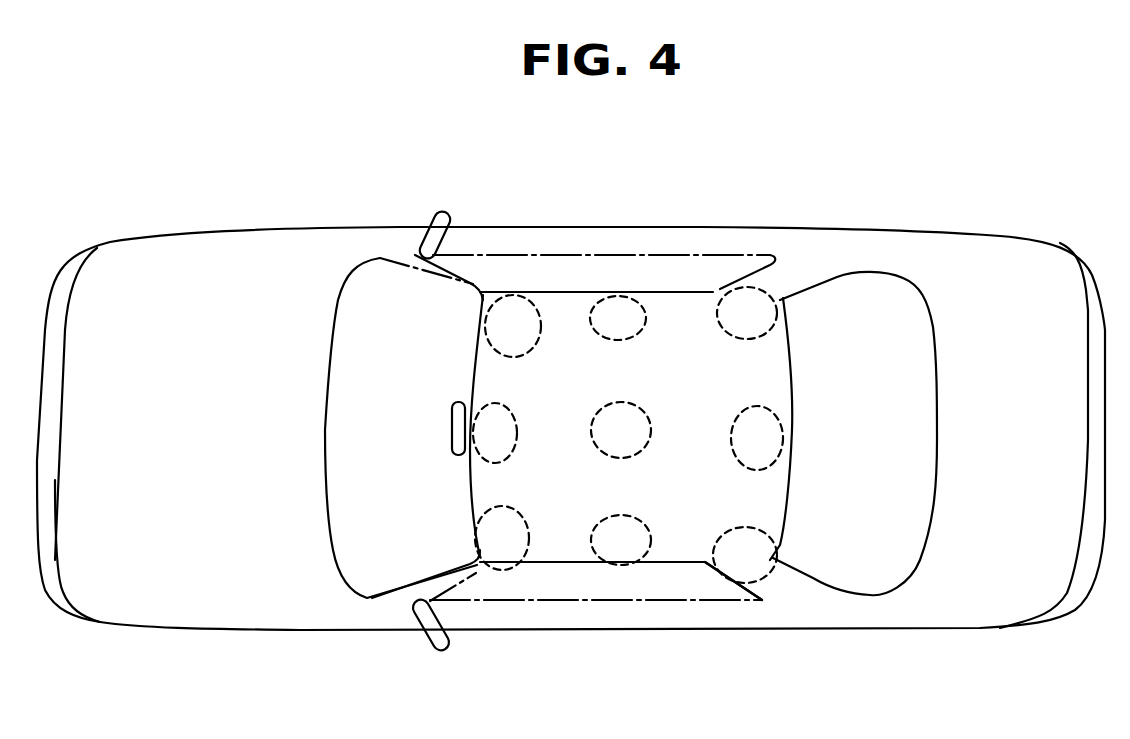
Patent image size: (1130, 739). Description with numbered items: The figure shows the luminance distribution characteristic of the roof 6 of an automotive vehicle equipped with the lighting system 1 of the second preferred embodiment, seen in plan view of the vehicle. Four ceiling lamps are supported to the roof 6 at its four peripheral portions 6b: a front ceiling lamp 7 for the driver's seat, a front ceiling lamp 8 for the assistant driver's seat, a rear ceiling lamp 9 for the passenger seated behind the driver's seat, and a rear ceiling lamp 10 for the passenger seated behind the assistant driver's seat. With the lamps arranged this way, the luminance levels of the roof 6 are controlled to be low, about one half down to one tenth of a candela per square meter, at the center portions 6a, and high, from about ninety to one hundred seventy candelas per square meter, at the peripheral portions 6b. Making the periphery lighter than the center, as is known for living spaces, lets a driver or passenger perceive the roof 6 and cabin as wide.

The lighting system 1 is at (690, 206).
The roof 6 is at (577, 363).
The center portions 6a is at (637, 337).
The peripheral portions 6b is at (476, 352).
The front ceiling lamp 7 is at (481, 328).
The front ceiling lamp 8 is at (481, 552).
The rear ceiling lamp 9 is at (708, 296).
The rear ceiling lamp 10 is at (762, 560).